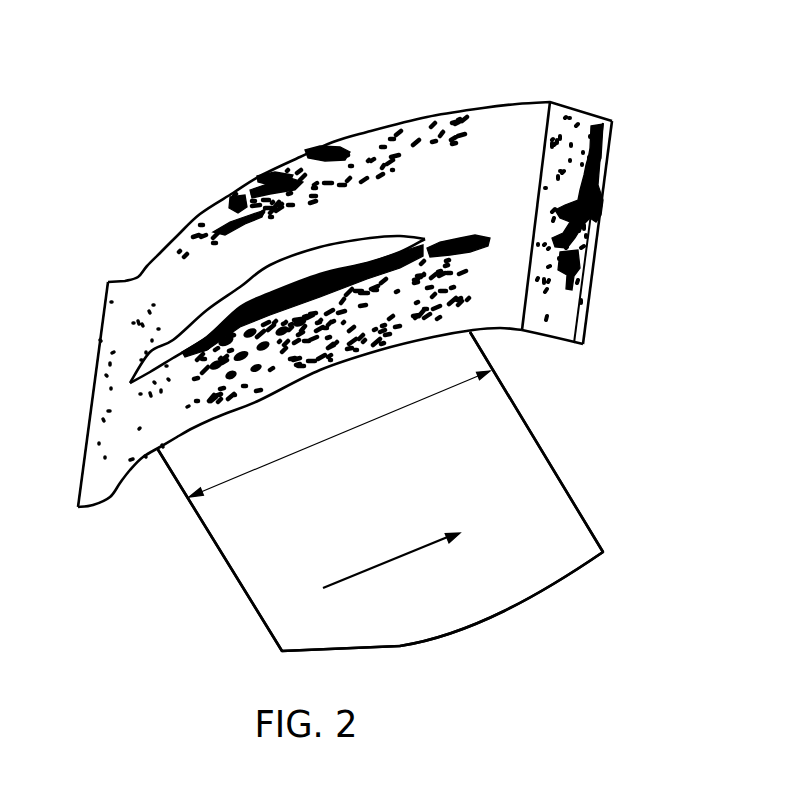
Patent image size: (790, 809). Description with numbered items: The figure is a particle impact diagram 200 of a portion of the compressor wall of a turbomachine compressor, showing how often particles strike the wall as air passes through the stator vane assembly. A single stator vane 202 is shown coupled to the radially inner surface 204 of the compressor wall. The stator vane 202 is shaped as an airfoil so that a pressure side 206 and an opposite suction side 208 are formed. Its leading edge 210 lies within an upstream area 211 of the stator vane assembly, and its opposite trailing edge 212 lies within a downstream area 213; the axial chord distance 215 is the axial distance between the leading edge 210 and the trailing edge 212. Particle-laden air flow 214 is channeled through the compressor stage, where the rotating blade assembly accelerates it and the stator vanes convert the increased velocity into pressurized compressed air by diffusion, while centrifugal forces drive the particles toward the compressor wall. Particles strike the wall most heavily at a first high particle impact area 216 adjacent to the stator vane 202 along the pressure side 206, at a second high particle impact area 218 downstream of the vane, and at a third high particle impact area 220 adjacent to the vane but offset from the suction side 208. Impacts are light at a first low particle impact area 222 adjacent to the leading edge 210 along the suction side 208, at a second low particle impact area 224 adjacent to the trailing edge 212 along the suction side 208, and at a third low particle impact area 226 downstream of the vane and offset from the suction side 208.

The particle impact diagram 200 is at (630, 77).
The stator vane 202 is at (475, 438).
The radially inner surface 204 is at (518, 149).
The pressure side 206 is at (160, 362).
The suction side 208 is at (160, 340).
The leading edge 210 is at (205, 533).
The upstream area 211 is at (228, 632).
The trailing edge 212 is at (506, 384).
The downstream area 213 is at (654, 500).
The air flow 214 is at (393, 560).
The axial chord distance 215 is at (347, 433).
The first high particle impact area 216 is at (263, 364).
The second high particle impact area 218 is at (599, 217).
The third high particle impact area 220 is at (260, 187).
The first low particle impact area 222 is at (172, 293).
The second low particle impact area 224 is at (372, 212).
The third low particle impact area 226 is at (467, 173).